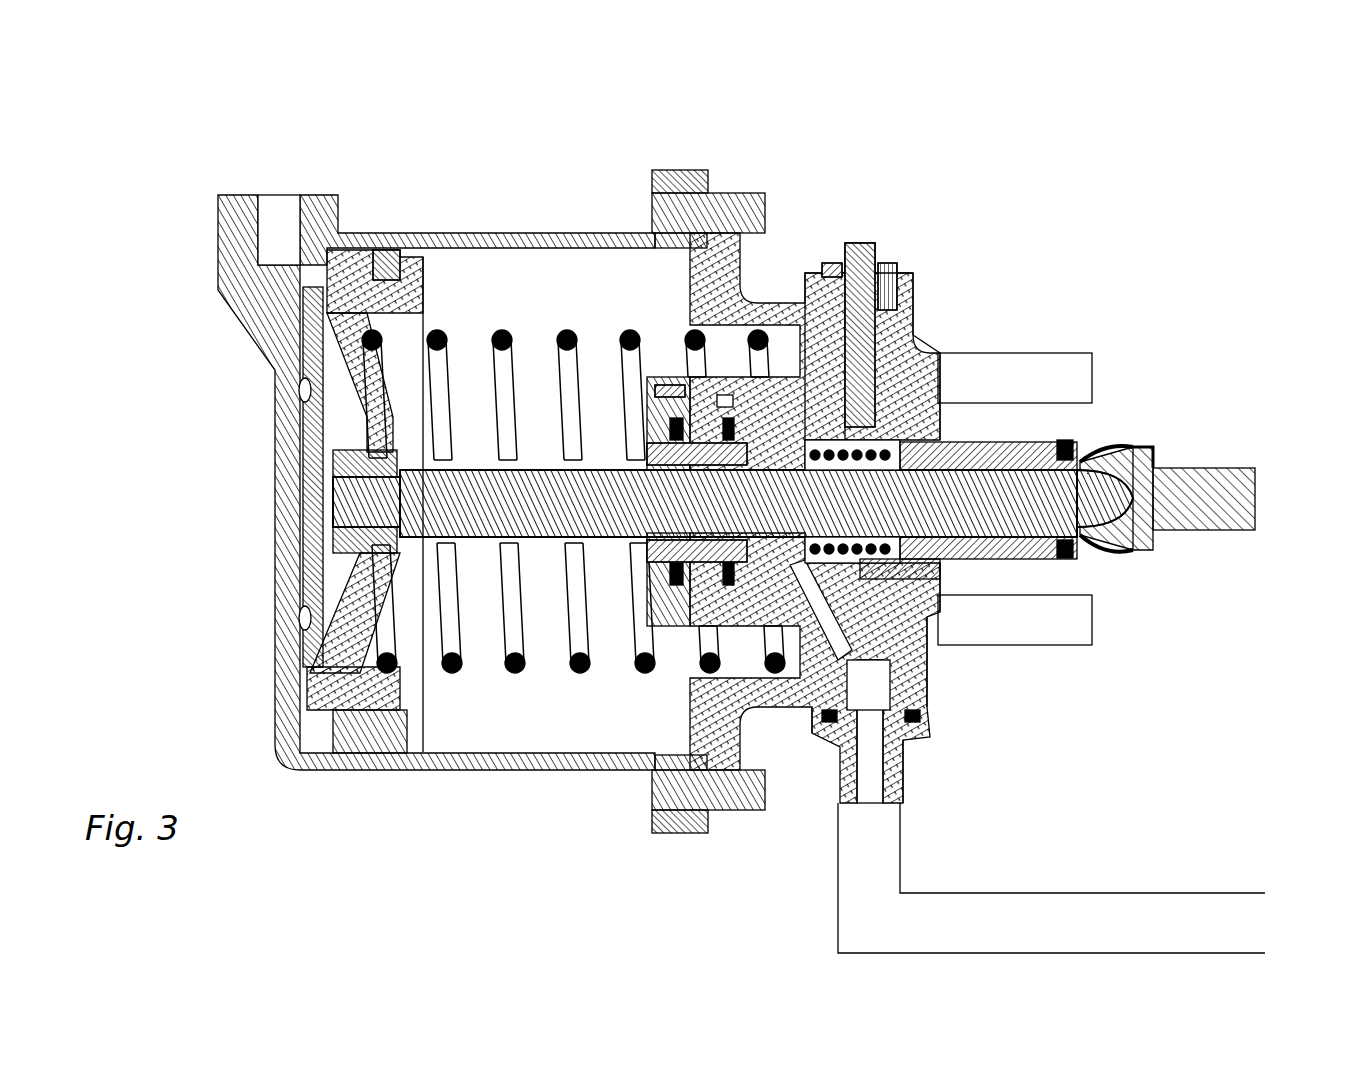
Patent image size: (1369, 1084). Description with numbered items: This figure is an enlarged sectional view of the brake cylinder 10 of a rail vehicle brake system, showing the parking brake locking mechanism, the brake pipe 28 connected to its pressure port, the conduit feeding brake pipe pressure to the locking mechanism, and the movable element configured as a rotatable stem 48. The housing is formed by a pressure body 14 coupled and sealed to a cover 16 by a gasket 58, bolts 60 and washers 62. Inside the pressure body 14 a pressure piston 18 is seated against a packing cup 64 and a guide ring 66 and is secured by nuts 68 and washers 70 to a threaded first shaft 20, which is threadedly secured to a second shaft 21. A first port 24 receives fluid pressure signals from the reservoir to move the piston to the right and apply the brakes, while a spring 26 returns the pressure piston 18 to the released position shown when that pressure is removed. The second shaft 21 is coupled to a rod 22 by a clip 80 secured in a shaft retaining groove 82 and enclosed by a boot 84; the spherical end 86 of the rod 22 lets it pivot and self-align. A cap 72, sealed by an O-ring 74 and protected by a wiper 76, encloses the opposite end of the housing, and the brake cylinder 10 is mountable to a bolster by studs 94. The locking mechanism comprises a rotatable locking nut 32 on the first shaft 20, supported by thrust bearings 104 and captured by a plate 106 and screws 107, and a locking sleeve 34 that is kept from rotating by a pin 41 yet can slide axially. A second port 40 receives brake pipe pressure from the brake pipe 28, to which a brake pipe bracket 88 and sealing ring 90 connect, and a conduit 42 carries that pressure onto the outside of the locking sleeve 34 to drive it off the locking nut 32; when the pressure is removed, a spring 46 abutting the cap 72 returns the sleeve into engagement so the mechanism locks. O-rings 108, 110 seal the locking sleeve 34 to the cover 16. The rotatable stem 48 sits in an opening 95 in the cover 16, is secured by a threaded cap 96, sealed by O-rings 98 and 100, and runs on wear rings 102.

The brake cylinder 10 is at (126, 140).
The pressure body 14 is at (240, 192).
The cover 16 is at (683, 765).
The pressure piston 18 is at (410, 752).
The first shaft 20 is at (568, 466).
The second shaft 21 is at (970, 562).
The rod 22 is at (1160, 455).
The first port 24 is at (278, 208).
The spring 26 is at (488, 322).
The brake pipe 28 is at (992, 934).
The locking nut 32 is at (687, 378).
The locking sleeve 34 is at (818, 268).
The second port 40 is at (875, 812).
The pin 41 is at (748, 275).
The conduit 42 is at (828, 680).
The spring 46 is at (940, 687).
The rotatable stem 48 is at (862, 241).
The gasket 58 is at (705, 173).
The bolts 60 is at (765, 812).
The washers 62 is at (742, 805).
The packing cup 64 is at (322, 250).
The guide ring 66 is at (378, 250).
The nuts 68 is at (342, 466).
The washers 70 is at (350, 568).
The cap 72 is at (1080, 440).
The O-ring 74 is at (943, 620).
The wiper 76 is at (1080, 560).
The clip 80 is at (1128, 558).
The shaft retaining groove 82 is at (1262, 498).
The boot 84 is at (1095, 550).
The spherical end 86 is at (1170, 475).
The brake pipe bracket 88 is at (903, 805).
The sealing ring 90 is at (915, 724).
The studs 94 is at (1075, 647).
The opening 95 is at (830, 236).
The cap 96 is at (908, 258).
The O-ring 98 is at (886, 260).
The O-ring 100 is at (912, 273).
The wear rings 102 is at (893, 387).
The thrust bearings 104 is at (668, 585).
The plate 106 is at (652, 365).
The screws 107 is at (720, 585).
The O-ring 108 is at (784, 682).
The O-ring 110 is at (905, 765).